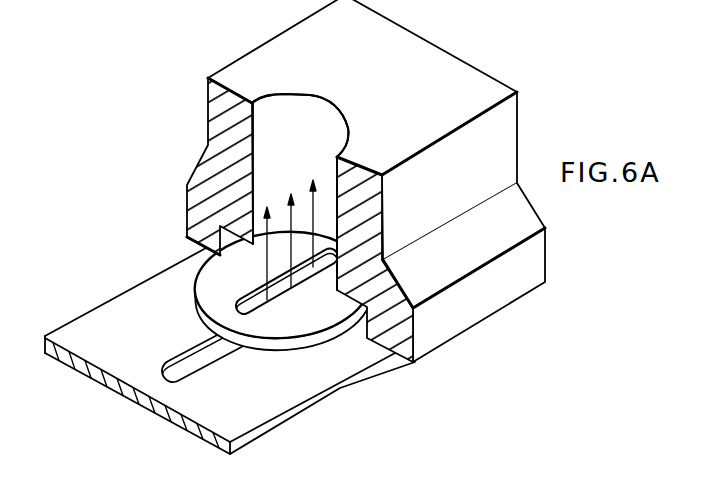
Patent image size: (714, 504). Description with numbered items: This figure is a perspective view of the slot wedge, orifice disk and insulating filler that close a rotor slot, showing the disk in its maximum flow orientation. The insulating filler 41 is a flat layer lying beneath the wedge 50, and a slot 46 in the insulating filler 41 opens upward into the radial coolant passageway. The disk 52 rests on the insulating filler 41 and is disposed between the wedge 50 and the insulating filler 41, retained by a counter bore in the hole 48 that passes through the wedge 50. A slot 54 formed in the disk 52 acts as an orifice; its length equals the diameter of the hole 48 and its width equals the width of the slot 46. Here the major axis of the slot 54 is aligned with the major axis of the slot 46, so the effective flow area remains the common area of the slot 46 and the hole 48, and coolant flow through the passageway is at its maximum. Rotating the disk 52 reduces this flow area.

The insulating filler 41 is at (75, 318).
The slot in the insulating filler 46 is at (185, 382).
The hole in the wedge 48 is at (333, 108).
The wedge 50 is at (418, 35).
The disk 52 is at (194, 294).
The slot in the disk 54 is at (245, 297).